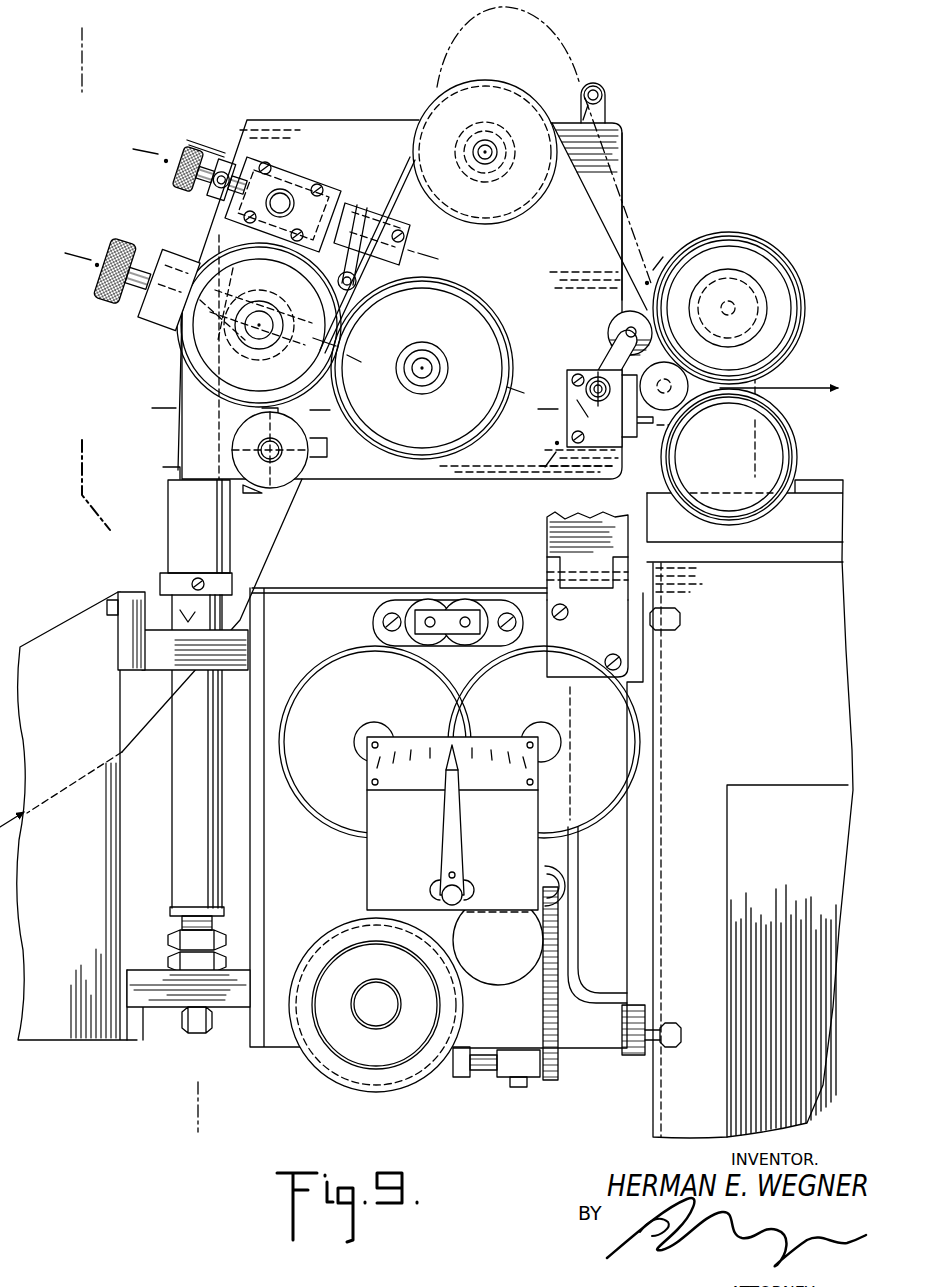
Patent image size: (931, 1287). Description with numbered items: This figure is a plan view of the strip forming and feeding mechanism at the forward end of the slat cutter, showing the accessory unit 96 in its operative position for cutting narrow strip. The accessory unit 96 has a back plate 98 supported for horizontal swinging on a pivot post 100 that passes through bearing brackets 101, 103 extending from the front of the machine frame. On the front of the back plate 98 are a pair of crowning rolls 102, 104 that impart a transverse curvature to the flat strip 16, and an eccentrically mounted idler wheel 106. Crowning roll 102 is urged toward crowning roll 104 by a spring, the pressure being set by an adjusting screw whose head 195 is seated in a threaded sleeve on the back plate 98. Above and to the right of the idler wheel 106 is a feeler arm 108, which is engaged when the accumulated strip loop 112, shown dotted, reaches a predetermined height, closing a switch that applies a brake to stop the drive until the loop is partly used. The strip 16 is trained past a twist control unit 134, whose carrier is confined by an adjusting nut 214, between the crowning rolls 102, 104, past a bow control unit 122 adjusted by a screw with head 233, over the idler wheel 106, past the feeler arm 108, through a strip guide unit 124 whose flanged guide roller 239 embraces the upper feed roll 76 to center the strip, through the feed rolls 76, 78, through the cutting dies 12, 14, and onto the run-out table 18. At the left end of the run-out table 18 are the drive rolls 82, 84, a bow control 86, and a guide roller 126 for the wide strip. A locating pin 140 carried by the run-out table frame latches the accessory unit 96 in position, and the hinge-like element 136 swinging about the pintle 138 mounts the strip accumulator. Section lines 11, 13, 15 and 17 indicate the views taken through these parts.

The section line 11- 11 is at (78, 52).
The cutting die 12 is at (149, 148).
The section line 13- 13 is at (80, 257).
The cutting die 14 is at (323, 341).
The section line 15- 15 is at (548, 388).
The strip 16 is at (163, 392).
The section line 17- 17 is at (659, 259).
The run-out table 18 is at (757, 553).
The upper feed roll 76 is at (763, 273).
The lower feed roll 78 is at (742, 503).
The drive roll 82 is at (347, 667).
The drive roll 84 is at (600, 745).
The bow control 86 is at (362, 863).
The accessory unit 96 is at (305, 100).
The back plate 98 is at (622, 152).
The pivot post 100 is at (180, 793).
The bearing bracket 101 is at (230, 655).
The crowning roll 102 is at (197, 360).
The bearing bracket 103 is at (155, 977).
The crowning roll 104 is at (483, 305).
The idler wheel 106 is at (520, 193).
The feeler arm 108 is at (604, 103).
The accumulated strip loop 112 is at (562, 36).
The bow control unit 122 is at (313, 166).
The strip guide unit 124 is at (594, 358).
The guide roller 126 is at (387, 1057).
The twist control unit 134 is at (231, 469).
The hinge-like element 136 is at (547, 523).
The pintle 138 is at (546, 575).
The locating pin 140 is at (640, 433).
The head of adjusting screw 195 is at (100, 293).
The adjusting nut 214 is at (243, 433).
The head of adjusting screw 233 is at (177, 181).
The guide roller 239 is at (620, 315).